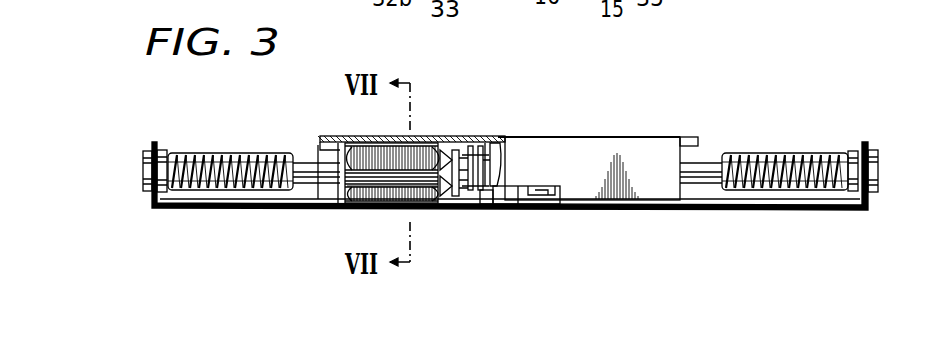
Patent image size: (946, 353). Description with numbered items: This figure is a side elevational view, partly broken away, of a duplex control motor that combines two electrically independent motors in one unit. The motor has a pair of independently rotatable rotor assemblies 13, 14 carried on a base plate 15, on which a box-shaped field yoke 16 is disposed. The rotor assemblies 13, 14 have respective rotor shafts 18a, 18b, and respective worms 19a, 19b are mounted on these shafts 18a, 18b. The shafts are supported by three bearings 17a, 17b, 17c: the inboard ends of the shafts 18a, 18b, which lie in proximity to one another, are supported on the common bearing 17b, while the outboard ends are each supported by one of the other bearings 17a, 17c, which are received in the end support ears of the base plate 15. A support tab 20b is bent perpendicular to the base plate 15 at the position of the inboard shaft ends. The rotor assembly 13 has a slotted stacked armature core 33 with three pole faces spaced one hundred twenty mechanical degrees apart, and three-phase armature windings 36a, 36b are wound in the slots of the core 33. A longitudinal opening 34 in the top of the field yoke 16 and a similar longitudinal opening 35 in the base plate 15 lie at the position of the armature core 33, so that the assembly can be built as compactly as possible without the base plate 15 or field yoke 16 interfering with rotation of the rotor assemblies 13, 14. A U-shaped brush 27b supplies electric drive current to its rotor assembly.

The rotor assembly 13 is at (313, 161).
The rotor assembly 14 is at (703, 158).
The base plate 15 is at (763, 209).
The field yoke 16 is at (578, 141).
The bearing 17a is at (143, 173).
The bearing 17b is at (497, 150).
The bearing 17c is at (878, 177).
The rotor shaft 18a is at (313, 186).
The rotor shaft 18b is at (698, 184).
The worm 19a is at (230, 191).
The worm 19b is at (801, 157).
The support tab 20b is at (507, 205).
The brush 27b is at (470, 191).
The armature core 33 is at (420, 142).
The longitudinal opening 34 is at (352, 137).
The longitudinal opening 35 is at (349, 202).
The armature winding 36a is at (447, 156).
The armature winding 36b is at (445, 182).